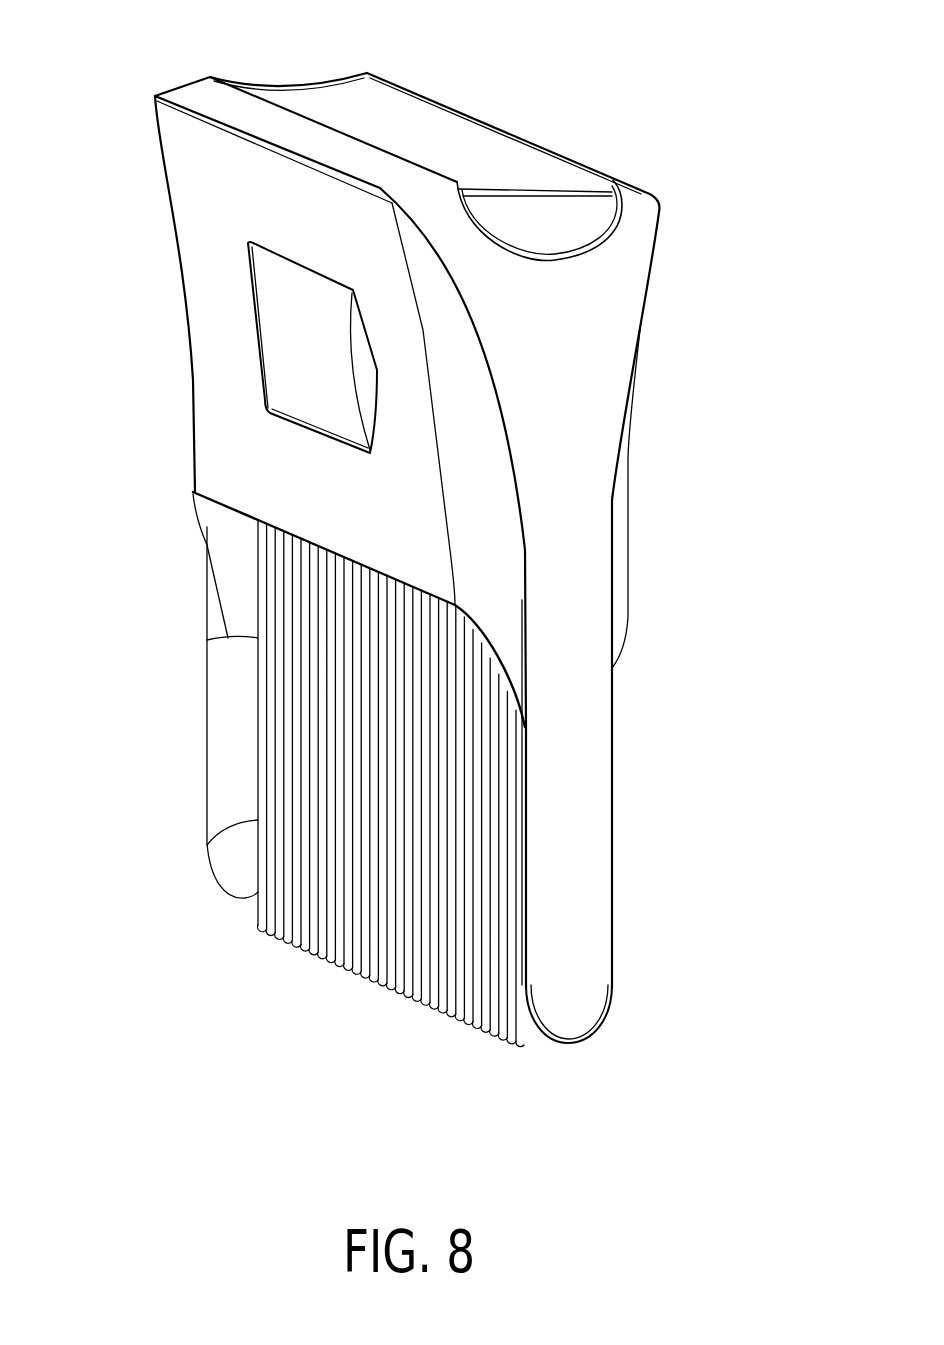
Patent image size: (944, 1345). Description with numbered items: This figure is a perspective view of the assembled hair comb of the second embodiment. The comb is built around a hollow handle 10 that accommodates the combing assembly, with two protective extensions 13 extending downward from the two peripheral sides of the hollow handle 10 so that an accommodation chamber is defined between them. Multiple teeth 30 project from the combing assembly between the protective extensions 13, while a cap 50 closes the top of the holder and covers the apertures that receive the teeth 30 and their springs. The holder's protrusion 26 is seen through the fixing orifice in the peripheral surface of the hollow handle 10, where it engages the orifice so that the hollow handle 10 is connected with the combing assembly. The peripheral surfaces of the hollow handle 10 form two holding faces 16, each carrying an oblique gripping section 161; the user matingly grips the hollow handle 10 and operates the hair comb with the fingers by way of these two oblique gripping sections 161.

The hollow handle 10 is at (651, 177).
The protective extensions 13 is at (213, 747).
The holding faces 16 is at (211, 256).
The protrusion 26 is at (292, 353).
The teeth 30 is at (496, 757).
The cap 50 is at (451, 132).
The oblique gripping sections 161 is at (177, 212).